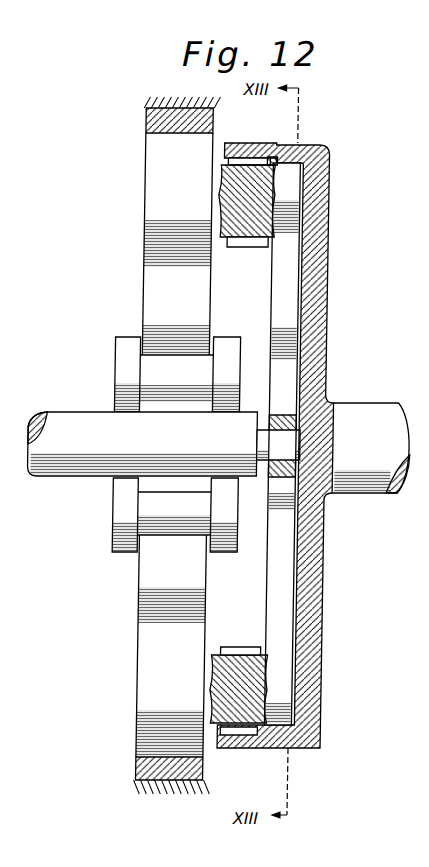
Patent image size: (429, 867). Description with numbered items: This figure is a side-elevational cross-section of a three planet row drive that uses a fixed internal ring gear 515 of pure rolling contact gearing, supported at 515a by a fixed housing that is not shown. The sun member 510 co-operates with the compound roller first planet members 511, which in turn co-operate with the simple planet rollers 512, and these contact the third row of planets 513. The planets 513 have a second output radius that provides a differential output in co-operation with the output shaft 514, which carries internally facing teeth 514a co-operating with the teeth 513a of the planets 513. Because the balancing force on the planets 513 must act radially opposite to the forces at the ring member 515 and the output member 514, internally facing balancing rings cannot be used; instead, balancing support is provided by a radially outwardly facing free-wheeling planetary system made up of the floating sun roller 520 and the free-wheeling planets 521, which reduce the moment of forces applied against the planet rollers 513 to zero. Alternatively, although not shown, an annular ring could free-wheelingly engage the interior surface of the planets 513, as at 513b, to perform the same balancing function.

The sun member 510 is at (106, 396).
The compound roller first planet members 511 is at (132, 363).
The simple planet rollers 512 is at (162, 300).
The planets 513 is at (244, 178).
The teeth 513a is at (247, 249).
The interior surface of the planets 513b is at (301, 236).
The output shaft 514 is at (397, 424).
The internally facing teeth 514a is at (274, 156).
The ring gear 515 is at (167, 118).
The ring gear support 515a is at (182, 103).
The floating sun roller 520 is at (287, 399).
The free-wheeling planets 521 is at (288, 310).